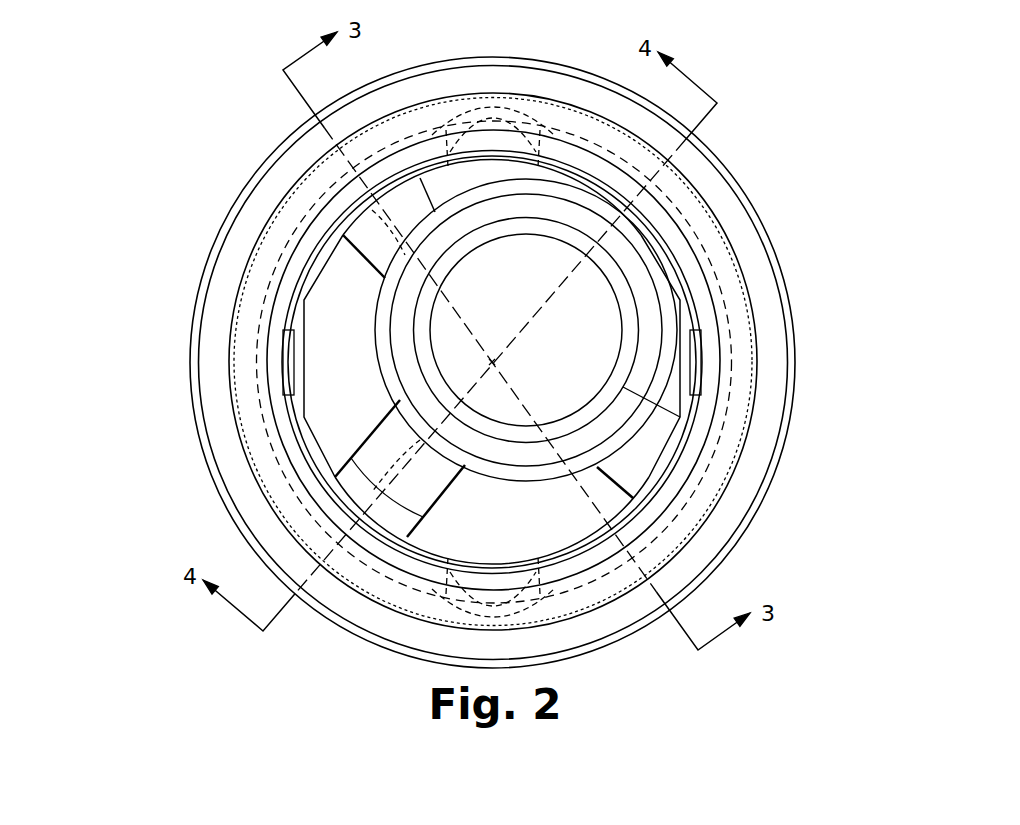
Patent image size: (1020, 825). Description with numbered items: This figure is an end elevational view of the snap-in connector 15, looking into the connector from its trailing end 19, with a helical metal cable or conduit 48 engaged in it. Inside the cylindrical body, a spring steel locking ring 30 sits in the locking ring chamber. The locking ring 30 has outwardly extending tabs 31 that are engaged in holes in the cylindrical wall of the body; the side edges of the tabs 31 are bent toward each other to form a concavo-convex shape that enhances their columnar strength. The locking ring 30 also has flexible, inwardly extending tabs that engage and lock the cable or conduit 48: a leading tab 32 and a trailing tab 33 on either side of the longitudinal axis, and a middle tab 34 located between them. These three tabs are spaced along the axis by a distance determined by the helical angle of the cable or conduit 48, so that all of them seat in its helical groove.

The snap-in connector 15 is at (812, 303).
The trailing end 19 is at (263, 201).
The locking ring 30 is at (633, 507).
The outwardly extending tabs 31 is at (516, 108).
The leading tab 32 is at (648, 447).
The trailing tab 33 is at (376, 238).
The middle tab 34 is at (430, 485).
The helical metal cable or conduit 48 is at (650, 262).